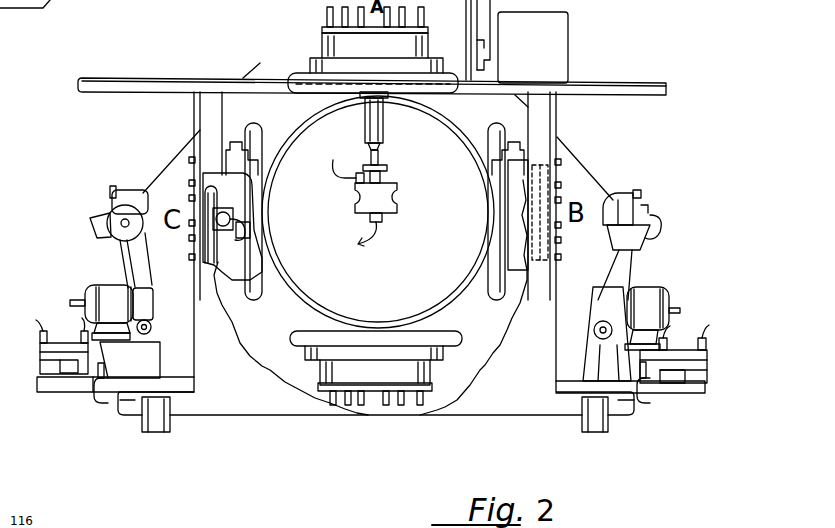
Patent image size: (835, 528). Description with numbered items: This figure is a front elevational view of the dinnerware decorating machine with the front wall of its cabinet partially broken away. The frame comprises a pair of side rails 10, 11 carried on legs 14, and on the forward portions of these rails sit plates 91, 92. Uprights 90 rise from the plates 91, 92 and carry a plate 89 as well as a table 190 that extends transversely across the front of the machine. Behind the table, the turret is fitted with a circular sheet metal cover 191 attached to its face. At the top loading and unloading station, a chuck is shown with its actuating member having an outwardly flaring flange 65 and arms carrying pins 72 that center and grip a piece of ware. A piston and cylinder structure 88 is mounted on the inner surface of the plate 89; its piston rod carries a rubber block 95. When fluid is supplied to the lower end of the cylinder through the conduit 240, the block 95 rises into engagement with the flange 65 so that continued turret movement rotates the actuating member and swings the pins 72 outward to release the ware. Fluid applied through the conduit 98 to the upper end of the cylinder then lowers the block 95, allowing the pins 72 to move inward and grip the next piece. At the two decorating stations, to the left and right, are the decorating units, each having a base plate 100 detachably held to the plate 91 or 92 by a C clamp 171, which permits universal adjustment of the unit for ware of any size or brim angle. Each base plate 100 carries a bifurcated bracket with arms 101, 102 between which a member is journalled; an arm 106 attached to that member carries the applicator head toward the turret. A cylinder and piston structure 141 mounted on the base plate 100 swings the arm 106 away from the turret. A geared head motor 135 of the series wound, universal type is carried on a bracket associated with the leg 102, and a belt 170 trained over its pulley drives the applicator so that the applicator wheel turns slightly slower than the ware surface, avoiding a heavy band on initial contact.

The table 190 is at (606, 80).
The outwardly flaring flange 65 is at (296, 78).
The pin 72 is at (348, 22).
The uprights 90 is at (212, 117).
The plate 89 is at (376, 253).
The circular sheet metal cover 191 is at (378, 212).
The rubber block 95 is at (383, 98).
The conduit 98 is at (342, 163).
The piston and cylinder structure 88 is at (386, 176).
The conduit 240 is at (368, 232).
The arm 106 is at (123, 257).
The belt 170 is at (143, 258).
The geared head motor 135 is at (103, 292).
The arm of bifurcated bracket 102 is at (130, 360).
The cylinder and piston structure 141 is at (78, 340).
The plate 92 is at (176, 382).
The plate 91 is at (573, 385).
The C clamp 171 is at (93, 396).
The base plate 100 is at (80, 384).
The side rail 11 is at (122, 398).
The side rail 10 is at (633, 402).
The legs 14 is at (143, 418).
The arm of bifurcated bracket 101 is at (596, 342).